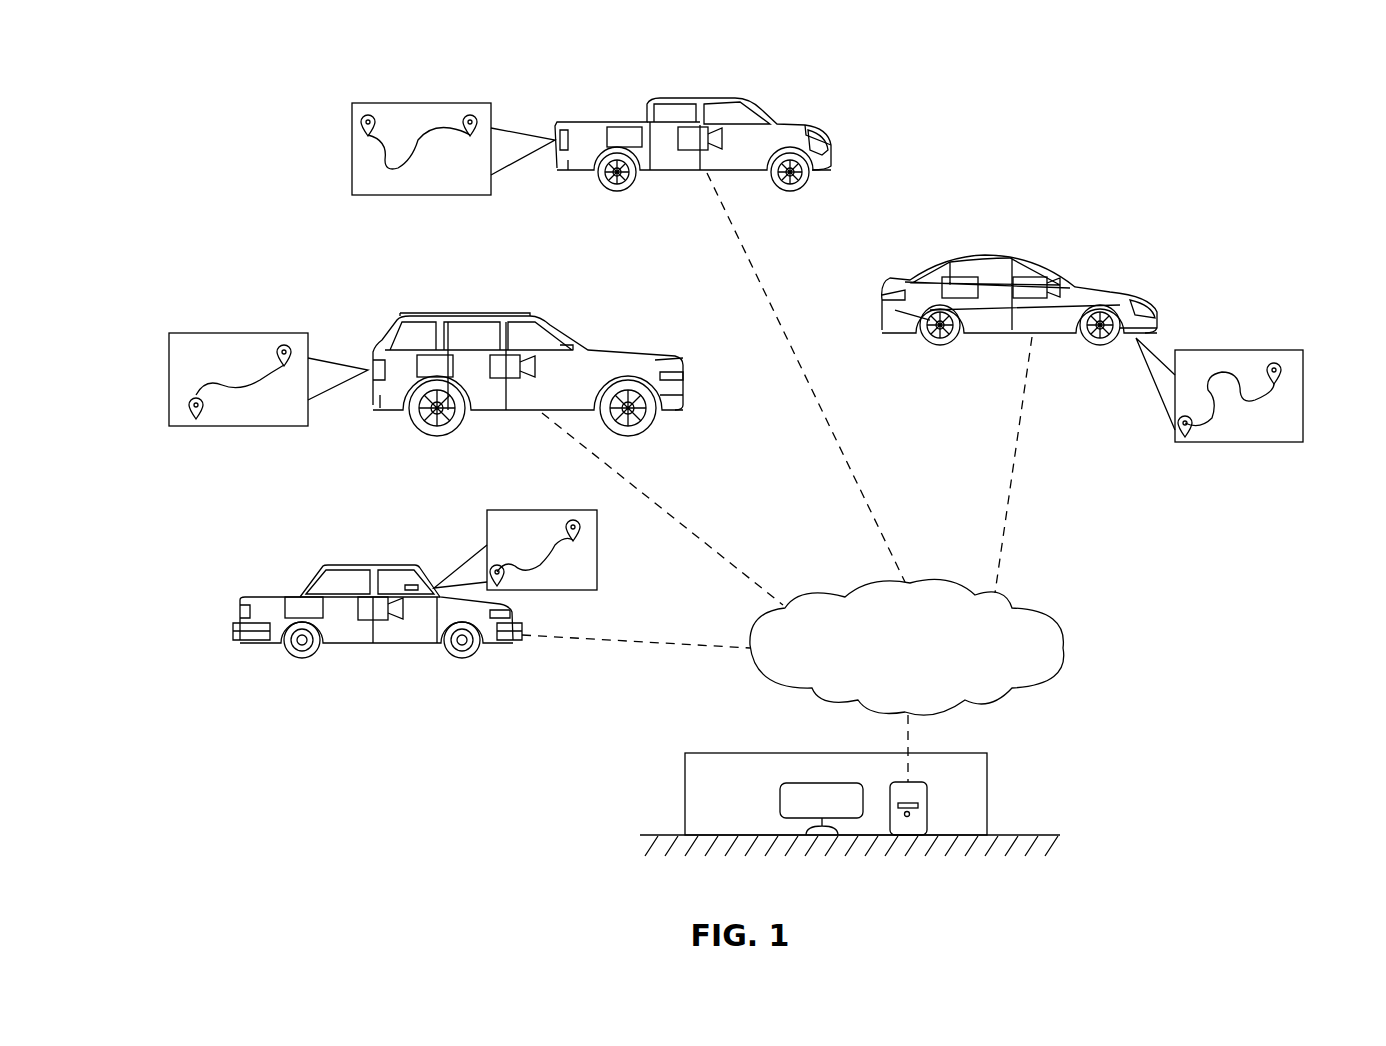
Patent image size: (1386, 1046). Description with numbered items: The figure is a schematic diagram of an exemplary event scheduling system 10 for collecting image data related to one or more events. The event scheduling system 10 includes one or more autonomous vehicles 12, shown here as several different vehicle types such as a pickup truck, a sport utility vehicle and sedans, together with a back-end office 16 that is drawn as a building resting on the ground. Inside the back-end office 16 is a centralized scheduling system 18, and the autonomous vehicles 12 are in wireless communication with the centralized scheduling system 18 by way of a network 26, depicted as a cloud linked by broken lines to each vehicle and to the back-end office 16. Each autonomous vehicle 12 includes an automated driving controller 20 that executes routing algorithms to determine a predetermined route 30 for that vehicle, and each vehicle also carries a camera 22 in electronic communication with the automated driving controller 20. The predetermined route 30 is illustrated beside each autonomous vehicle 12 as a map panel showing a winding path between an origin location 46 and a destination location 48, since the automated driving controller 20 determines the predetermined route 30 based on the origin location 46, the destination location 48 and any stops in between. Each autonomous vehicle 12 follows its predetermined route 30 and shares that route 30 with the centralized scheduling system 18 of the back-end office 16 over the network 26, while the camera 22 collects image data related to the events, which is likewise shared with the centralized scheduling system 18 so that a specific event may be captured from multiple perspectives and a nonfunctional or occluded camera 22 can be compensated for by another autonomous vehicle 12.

The event scheduling system 10 is at (1252, 132).
The autonomous vehicle 12 is at (740, 102).
The back-end office 16 is at (685, 778).
The centralized scheduling system 18 is at (923, 815).
The automated driving controller 20 is at (623, 130).
The camera 22 is at (697, 134).
The network 26 is at (894, 660).
The predetermined route 30 is at (352, 150).
The origin location 46 is at (360, 120).
The destination location 48 is at (467, 118).